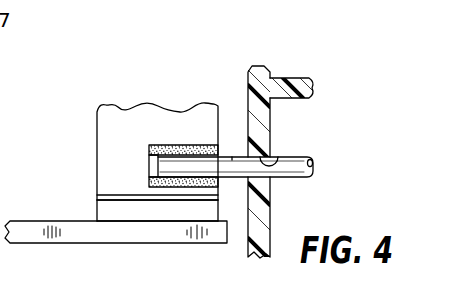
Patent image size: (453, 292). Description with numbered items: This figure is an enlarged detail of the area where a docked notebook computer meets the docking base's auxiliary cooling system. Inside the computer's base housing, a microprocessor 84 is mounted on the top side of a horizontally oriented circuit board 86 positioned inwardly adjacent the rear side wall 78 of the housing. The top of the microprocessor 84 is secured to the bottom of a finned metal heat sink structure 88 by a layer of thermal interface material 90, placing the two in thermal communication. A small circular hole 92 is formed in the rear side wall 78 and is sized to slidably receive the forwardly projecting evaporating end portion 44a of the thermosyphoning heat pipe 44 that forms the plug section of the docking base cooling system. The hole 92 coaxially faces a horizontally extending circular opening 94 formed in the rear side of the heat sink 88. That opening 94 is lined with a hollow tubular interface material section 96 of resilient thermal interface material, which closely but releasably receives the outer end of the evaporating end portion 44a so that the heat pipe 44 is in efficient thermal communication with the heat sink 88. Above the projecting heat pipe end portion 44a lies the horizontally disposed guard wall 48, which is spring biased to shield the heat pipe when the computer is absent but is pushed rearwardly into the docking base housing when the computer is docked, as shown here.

The heat pipe 44 is at (303, 150).
The evaporating end portion 44a is at (232, 157).
The guard wall 48 is at (293, 78).
The rear side wall 78 is at (270, 218).
The microprocessor 84 is at (172, 215).
The circuit board 86 is at (41, 230).
The heat sink structure 88 is at (110, 134).
The thermal interface material 90 is at (123, 200).
The circular hole 92 is at (277, 155).
The circular opening 94 is at (149, 163).
The tubular interface material section 96 is at (168, 145).